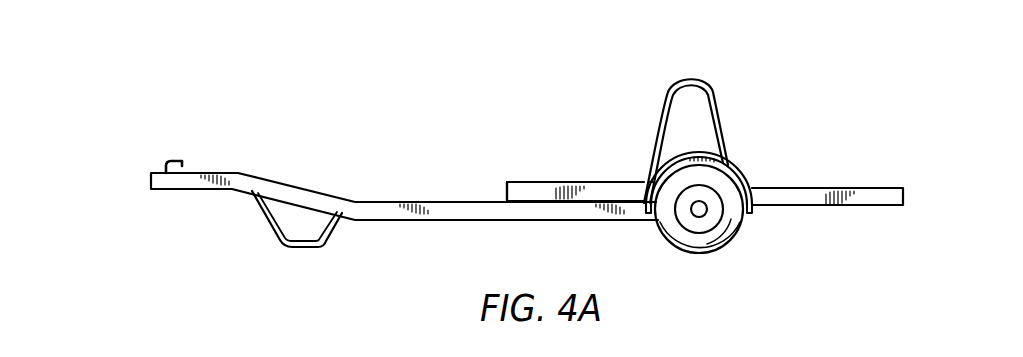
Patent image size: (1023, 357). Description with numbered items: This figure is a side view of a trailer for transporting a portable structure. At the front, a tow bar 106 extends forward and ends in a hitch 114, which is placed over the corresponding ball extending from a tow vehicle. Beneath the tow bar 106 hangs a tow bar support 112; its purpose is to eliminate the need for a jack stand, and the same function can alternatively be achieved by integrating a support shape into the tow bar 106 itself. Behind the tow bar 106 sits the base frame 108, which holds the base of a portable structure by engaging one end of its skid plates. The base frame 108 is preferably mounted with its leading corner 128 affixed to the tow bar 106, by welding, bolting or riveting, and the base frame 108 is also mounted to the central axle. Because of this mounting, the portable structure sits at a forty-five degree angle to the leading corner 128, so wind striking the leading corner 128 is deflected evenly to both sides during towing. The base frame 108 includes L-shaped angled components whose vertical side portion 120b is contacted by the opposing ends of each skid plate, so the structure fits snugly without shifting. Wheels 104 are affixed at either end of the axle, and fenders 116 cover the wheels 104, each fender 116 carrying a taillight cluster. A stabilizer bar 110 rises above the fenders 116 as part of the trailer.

The wheels 104 is at (735, 243).
The tow bar 106 is at (330, 193).
The base frame 108 is at (517, 181).
The stabilizer bar 110 is at (692, 80).
The tow bar support 112 is at (313, 249).
The hitch 114 is at (174, 160).
The fenders 116 is at (740, 165).
The vertical side portion 120b is at (558, 182).
The leading corner 128 is at (506, 192).